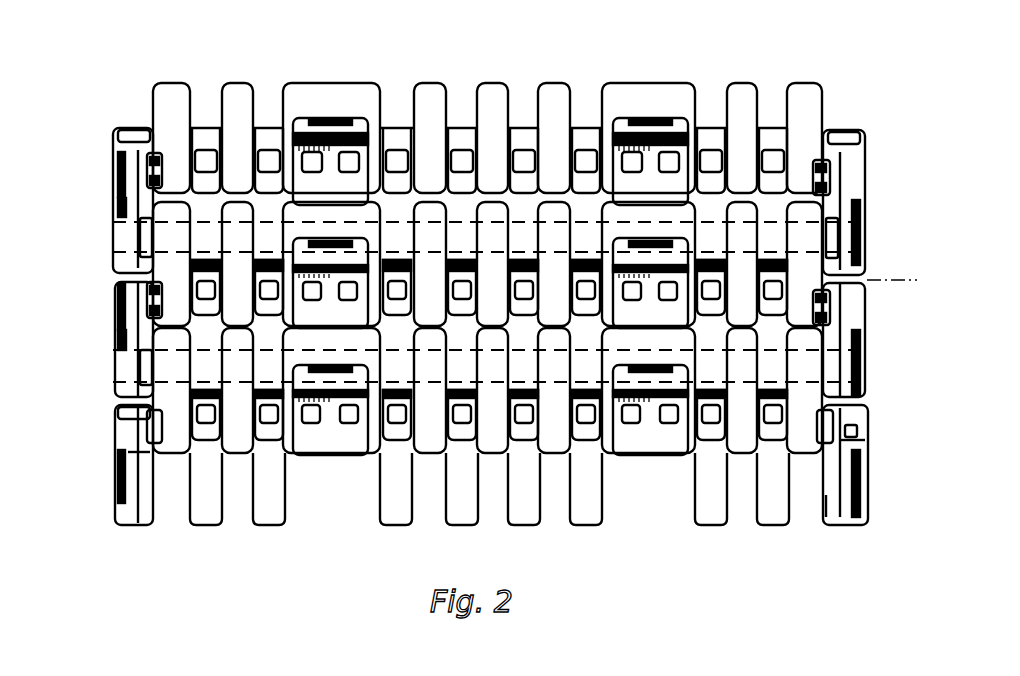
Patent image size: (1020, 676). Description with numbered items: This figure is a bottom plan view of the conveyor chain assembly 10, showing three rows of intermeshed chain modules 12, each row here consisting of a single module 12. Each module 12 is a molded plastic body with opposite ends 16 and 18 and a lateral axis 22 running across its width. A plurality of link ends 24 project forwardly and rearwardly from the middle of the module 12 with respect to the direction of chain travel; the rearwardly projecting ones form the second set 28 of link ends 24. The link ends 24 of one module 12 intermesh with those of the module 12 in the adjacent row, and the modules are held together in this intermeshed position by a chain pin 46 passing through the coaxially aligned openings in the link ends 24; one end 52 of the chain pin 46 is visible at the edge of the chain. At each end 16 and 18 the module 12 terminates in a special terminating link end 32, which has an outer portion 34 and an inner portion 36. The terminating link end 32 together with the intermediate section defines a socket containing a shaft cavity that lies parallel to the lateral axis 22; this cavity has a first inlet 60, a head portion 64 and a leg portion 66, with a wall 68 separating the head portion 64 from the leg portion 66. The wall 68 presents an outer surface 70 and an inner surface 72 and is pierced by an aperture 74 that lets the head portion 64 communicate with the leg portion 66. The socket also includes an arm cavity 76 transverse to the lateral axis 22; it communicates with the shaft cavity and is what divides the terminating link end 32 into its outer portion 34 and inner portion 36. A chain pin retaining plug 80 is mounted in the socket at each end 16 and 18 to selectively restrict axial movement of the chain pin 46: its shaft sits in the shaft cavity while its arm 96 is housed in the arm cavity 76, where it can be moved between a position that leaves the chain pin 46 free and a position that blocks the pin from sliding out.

The conveyor chain assembly 10 is at (715, 55).
The chain module 12 is at (150, 198).
The end 16 is at (118, 128).
The end 18 is at (866, 130).
The lateral axis 22 is at (912, 275).
The link ends 24 is at (540, 335).
The second set of link ends 28 is at (463, 527).
The terminating link end 32 is at (118, 503).
The outer portion 34 is at (870, 511).
The inner portion 36 is at (853, 432).
The chain pin 46 is at (425, 220).
The end of chain pin 52 is at (140, 240).
The first inlet 60 is at (867, 223).
The head portion 64 is at (860, 441).
The leg portion 66 is at (870, 413).
The wall 68 is at (137, 412).
The outer surface 70 is at (140, 430).
The inner surface 72 is at (140, 452).
The aperture 74 is at (125, 153).
The arm cavity 76 is at (847, 517).
The chain pin retaining plug 80 is at (120, 168).
The arm 96 is at (835, 495).